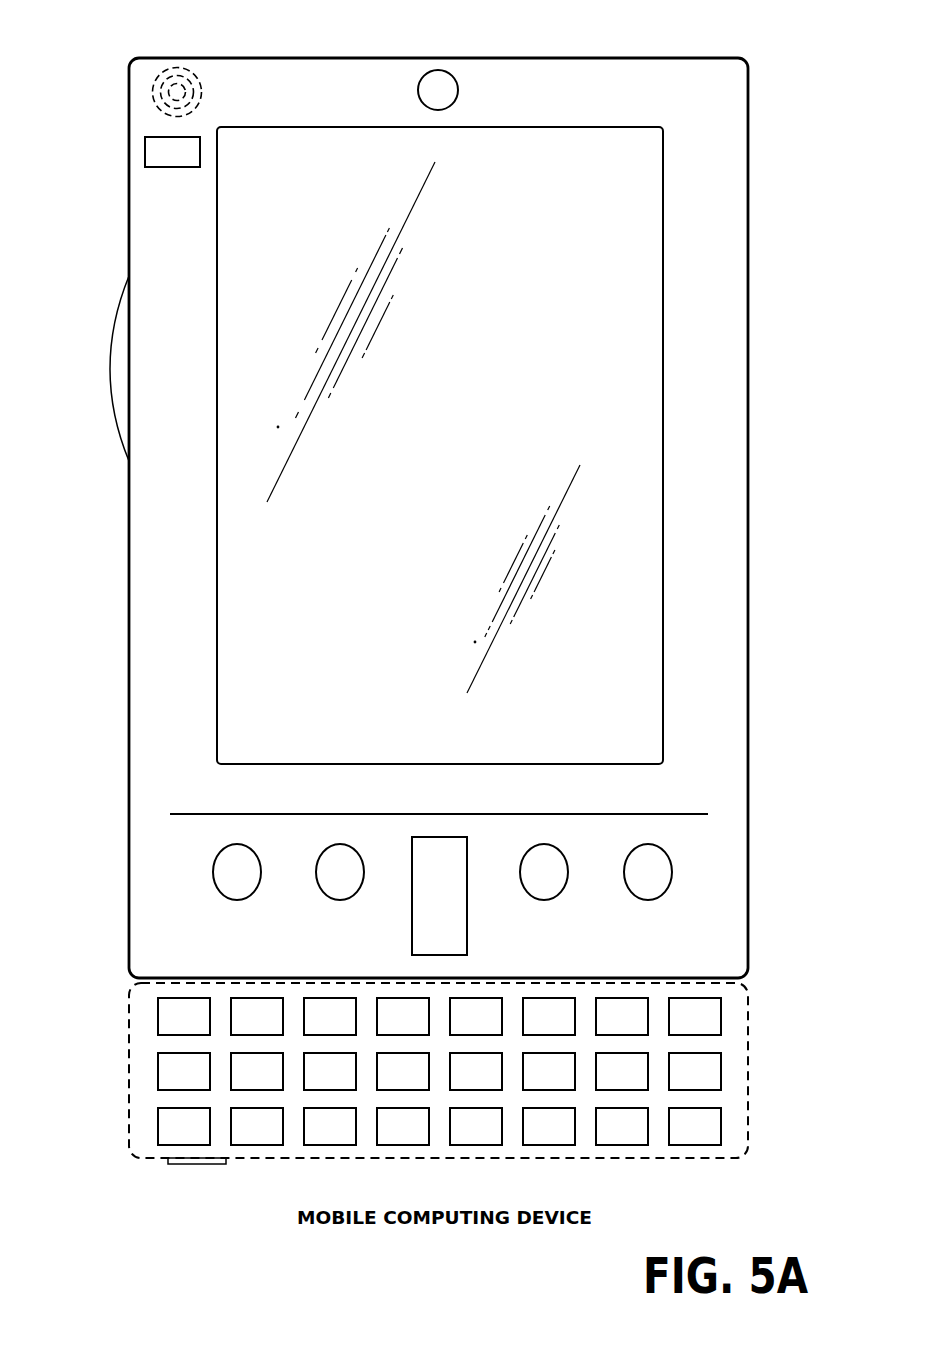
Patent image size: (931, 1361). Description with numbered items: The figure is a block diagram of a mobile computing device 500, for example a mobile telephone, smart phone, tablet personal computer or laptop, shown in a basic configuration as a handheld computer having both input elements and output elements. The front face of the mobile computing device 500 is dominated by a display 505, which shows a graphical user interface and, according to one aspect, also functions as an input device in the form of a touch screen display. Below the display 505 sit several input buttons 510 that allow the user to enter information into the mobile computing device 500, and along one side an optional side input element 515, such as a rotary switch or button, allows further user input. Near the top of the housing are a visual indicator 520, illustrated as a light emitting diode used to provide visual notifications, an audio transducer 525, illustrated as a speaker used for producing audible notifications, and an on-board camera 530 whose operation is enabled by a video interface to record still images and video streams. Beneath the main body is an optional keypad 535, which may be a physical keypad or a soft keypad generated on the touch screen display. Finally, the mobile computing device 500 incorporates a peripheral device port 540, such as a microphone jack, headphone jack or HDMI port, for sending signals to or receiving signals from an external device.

The mobile computing device 500 is at (715, 58).
The display 505 is at (241, 610).
The input buttons 510 is at (237, 900).
The side input element 515 is at (110, 369).
The visual indicator 520 is at (145, 153).
The audio transducer 525 is at (150, 93).
The on-board camera 530 is at (440, 70).
The keypad 535 is at (125, 1065).
The peripheral device port 540 is at (176, 1166).